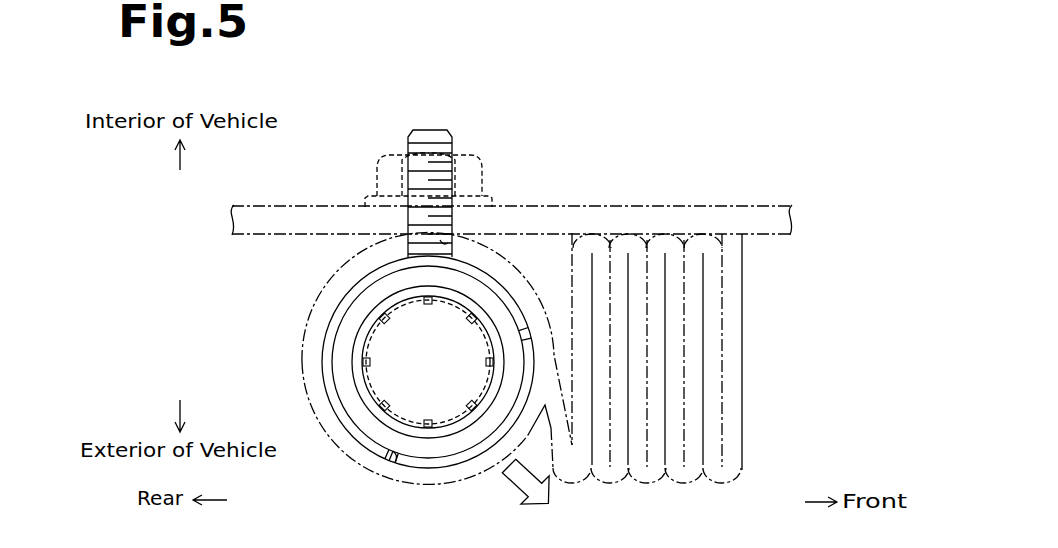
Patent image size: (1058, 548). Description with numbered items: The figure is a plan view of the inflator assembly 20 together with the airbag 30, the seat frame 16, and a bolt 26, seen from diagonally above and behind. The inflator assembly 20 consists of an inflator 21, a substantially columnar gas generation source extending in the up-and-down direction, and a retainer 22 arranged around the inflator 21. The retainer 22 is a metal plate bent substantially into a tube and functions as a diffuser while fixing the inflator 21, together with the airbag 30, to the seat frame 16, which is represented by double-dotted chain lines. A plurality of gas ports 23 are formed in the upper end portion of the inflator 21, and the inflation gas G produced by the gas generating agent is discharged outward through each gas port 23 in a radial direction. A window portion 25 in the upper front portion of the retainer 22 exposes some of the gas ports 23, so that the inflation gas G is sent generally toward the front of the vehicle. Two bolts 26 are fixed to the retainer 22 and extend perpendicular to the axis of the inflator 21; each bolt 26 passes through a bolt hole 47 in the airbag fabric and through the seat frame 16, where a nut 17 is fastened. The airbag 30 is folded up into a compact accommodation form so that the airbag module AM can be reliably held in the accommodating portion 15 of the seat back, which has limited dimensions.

The accommodating portion 15 is at (792, 384).
The seat frame 16 is at (705, 206).
The nut 17 is at (482, 179).
The inflator assembly 20 is at (252, 305).
The inflator 21 is at (365, 330).
The retainer 22 is at (325, 355).
The gas ports 23 is at (403, 316).
The window portion 25 is at (395, 462).
The bolt 26 is at (452, 131).
The airbag 30 is at (742, 296).
The bolt hole 47 is at (446, 243).
The airbag module AM is at (339, 478).
The inflation gas G is at (508, 478).